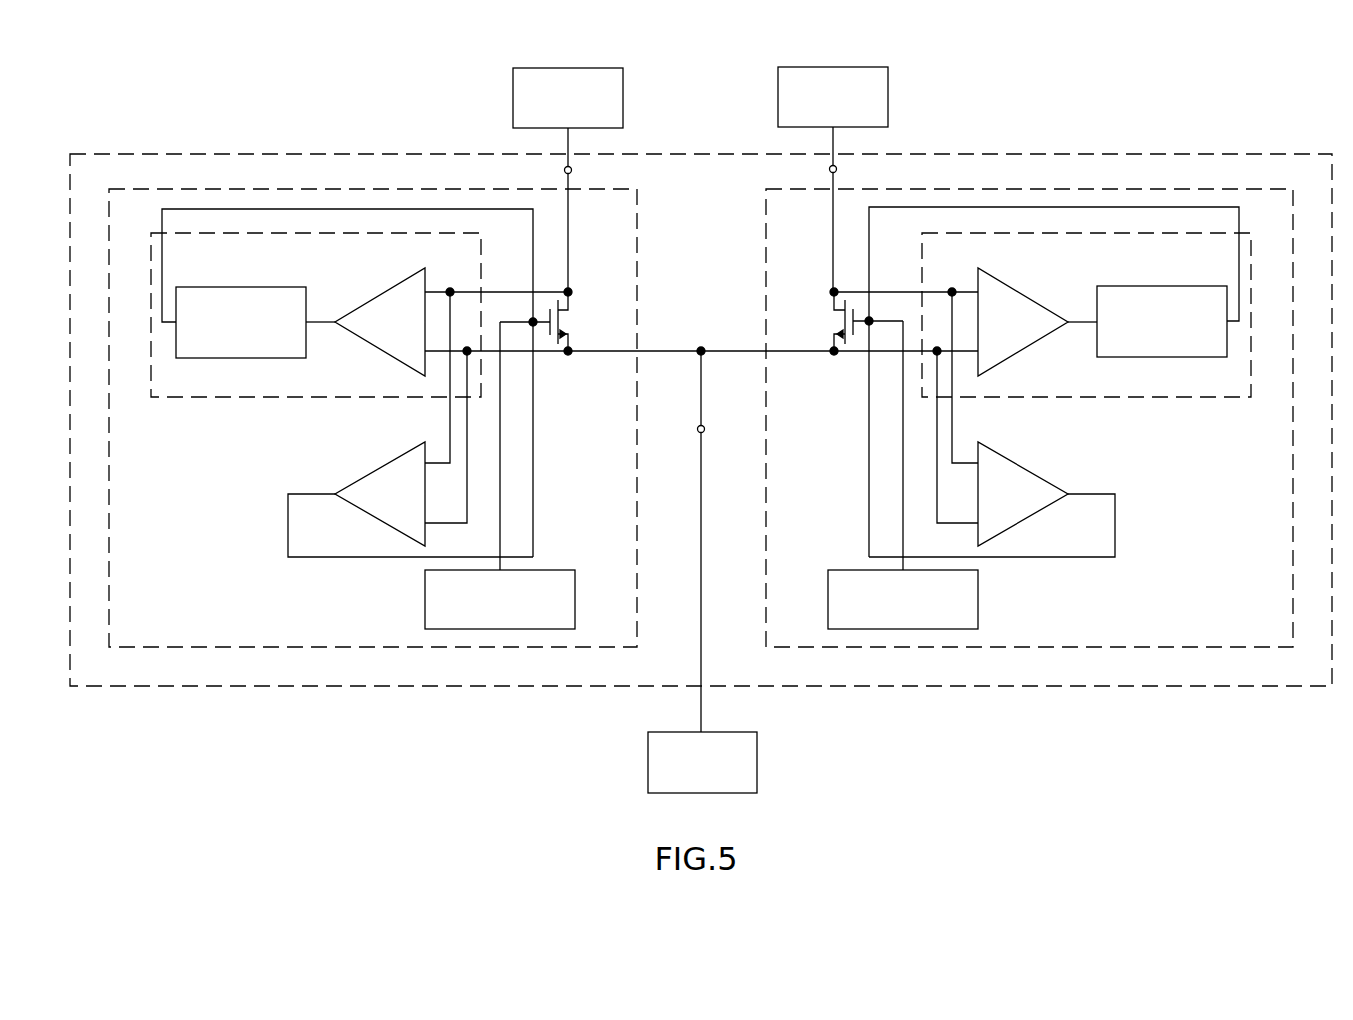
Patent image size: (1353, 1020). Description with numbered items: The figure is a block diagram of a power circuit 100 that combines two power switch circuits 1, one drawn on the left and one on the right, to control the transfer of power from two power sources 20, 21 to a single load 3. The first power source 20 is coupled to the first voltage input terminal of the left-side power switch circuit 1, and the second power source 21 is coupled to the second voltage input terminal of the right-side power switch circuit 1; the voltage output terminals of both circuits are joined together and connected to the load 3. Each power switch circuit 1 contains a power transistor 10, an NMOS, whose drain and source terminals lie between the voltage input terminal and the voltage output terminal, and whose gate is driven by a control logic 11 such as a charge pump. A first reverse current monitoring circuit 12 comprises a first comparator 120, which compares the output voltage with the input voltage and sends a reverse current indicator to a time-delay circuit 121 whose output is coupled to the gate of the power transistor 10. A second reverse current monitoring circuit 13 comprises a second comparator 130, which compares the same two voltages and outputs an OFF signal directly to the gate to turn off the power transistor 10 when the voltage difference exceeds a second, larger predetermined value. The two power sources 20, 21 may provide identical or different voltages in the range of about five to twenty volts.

The power circuit 100 is at (673, 43).
The power switch circuit 1 is at (266, 187).
The first power source 20 is at (513, 100).
The second power source 21 is at (888, 95).
The power transistor 10 is at (569, 362).
The control logic 11 is at (445, 629).
The first reverse current monitoring circuit 12 is at (200, 400).
The first comparator 120 is at (372, 359).
The time-delay circuit 121 is at (250, 359).
The second reverse current monitoring circuit 13 is at (347, 563).
The second comparator 130 is at (383, 466).
The load 3 is at (757, 762).